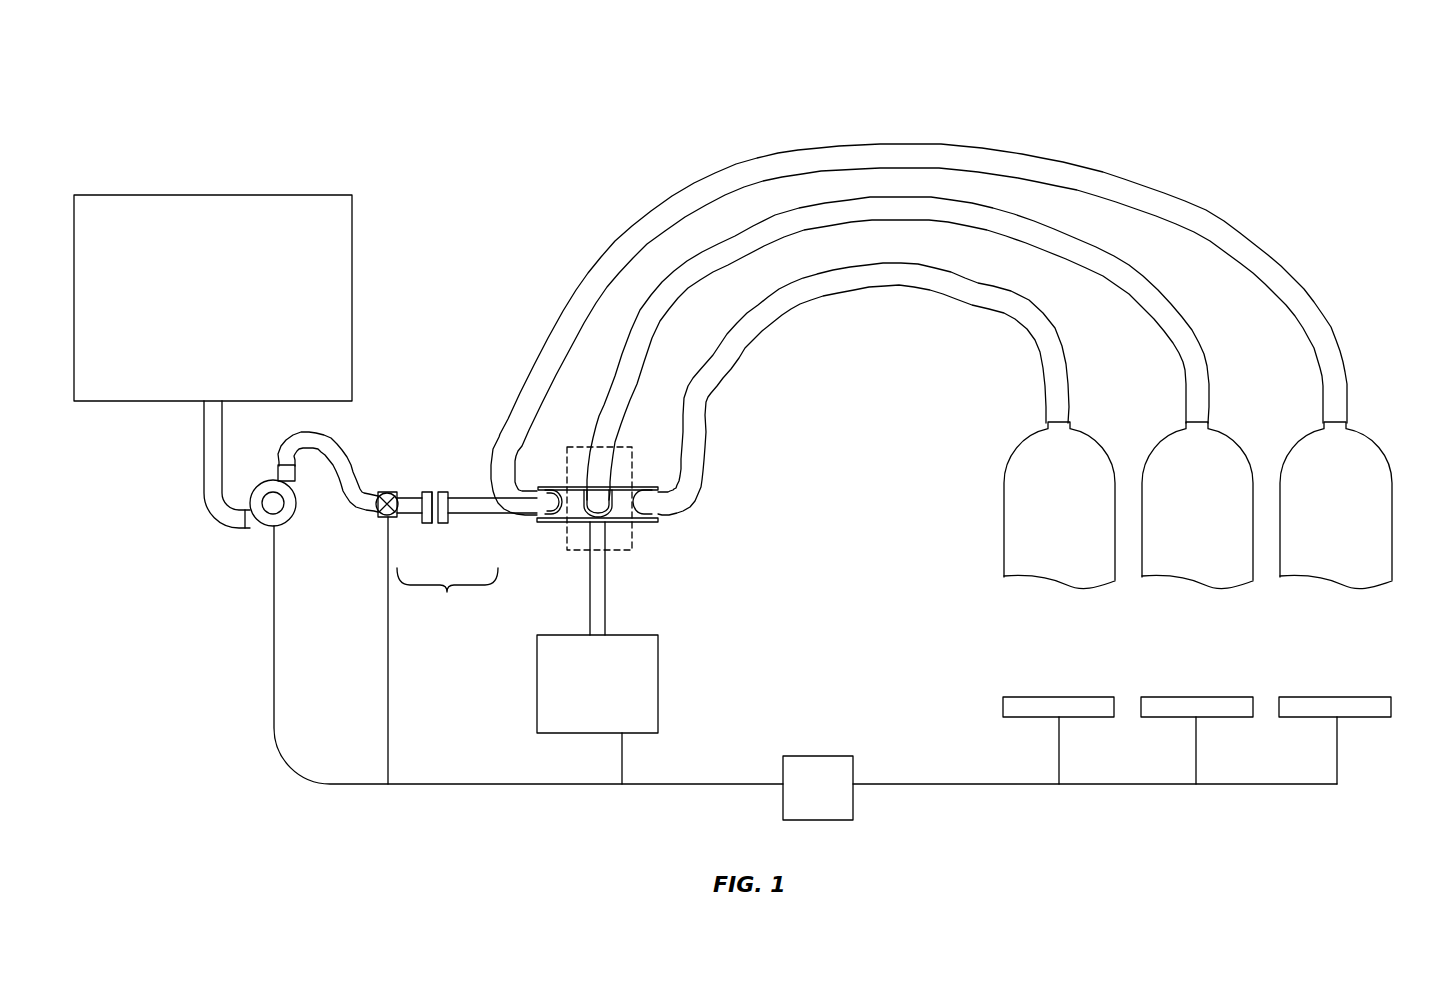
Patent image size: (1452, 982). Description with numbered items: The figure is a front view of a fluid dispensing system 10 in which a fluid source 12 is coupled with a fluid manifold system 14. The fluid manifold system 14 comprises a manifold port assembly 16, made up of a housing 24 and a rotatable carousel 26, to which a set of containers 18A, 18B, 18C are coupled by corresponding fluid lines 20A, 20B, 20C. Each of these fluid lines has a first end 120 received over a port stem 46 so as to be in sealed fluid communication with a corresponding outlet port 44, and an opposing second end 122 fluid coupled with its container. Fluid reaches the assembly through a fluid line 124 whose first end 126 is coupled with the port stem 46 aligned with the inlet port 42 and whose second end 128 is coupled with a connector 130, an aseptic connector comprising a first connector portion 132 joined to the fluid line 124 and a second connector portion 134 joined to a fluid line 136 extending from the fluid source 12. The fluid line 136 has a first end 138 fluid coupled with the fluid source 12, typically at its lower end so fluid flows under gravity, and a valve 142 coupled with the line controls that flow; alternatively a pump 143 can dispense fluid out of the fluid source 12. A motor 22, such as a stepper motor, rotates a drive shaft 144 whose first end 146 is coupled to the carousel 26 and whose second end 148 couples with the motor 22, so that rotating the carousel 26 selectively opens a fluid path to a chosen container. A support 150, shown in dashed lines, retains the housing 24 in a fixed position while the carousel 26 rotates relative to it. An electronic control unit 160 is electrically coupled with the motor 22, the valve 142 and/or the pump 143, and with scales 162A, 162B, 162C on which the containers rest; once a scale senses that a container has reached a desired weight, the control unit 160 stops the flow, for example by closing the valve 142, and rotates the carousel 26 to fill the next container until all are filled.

The fluid dispensing system 10 is at (1110, 83).
The fluid source 12 is at (352, 275).
The fluid manifold system 14 is at (903, 608).
The manifold port assembly 16 is at (620, 540).
The container 18A is at (1056, 582).
The container 18B is at (1194, 582).
The container 18C is at (1332, 582).
The fluid line 20A is at (980, 300).
The fluid line 20B is at (1122, 290).
The fluid line 20C is at (1250, 264).
The motor 22 is at (557, 735).
The housing 24 is at (575, 502).
The carousel 26 is at (632, 530).
The inlet port 42 is at (558, 493).
The outlet port 44 is at (630, 472).
The port stem 46 is at (641, 497).
The first end 120 is at (698, 520).
The second end 122 is at (1012, 407).
The fluid line 124 is at (497, 497).
The first end 126 is at (521, 527).
The second end 128 is at (463, 493).
The connector 130 is at (447, 594).
The first connector portion 132 is at (450, 523).
The second connector portion 134 is at (428, 523).
The fluid line 136 is at (204, 490).
The first end 138 is at (197, 406).
The valve 142 is at (383, 492).
The pump 143 is at (290, 519).
The drive shaft 144 is at (606, 600).
The first end 146 is at (572, 552).
The second end 148 is at (583, 622).
The support 150 is at (582, 447).
The electronic control unit 160 is at (830, 820).
The scale 162A is at (1067, 712).
The scale 162B is at (1204, 712).
The scale 162C is at (1342, 712).